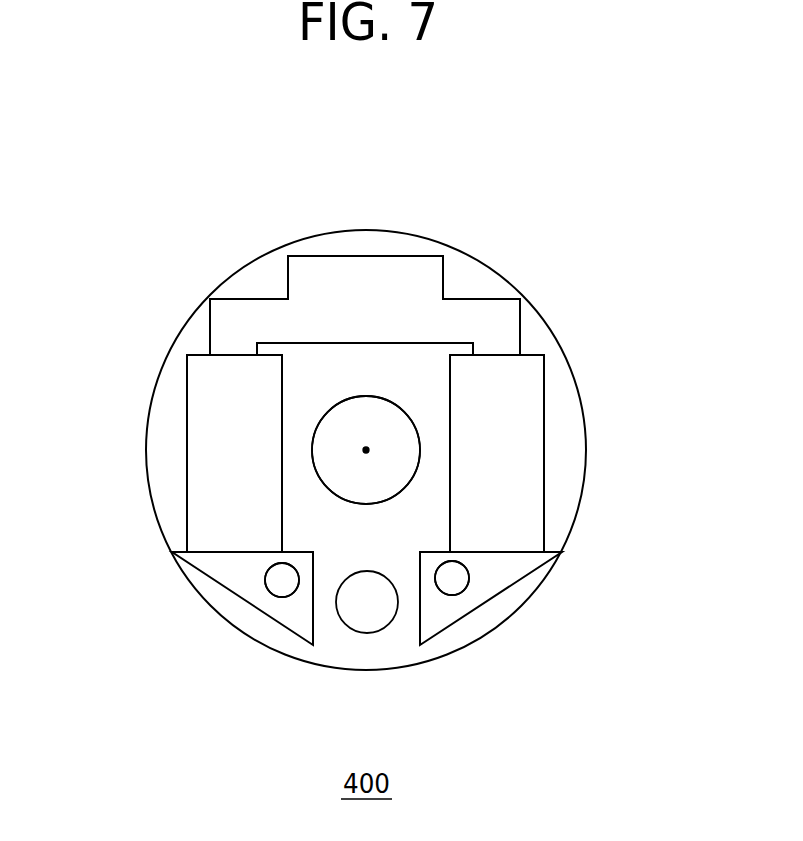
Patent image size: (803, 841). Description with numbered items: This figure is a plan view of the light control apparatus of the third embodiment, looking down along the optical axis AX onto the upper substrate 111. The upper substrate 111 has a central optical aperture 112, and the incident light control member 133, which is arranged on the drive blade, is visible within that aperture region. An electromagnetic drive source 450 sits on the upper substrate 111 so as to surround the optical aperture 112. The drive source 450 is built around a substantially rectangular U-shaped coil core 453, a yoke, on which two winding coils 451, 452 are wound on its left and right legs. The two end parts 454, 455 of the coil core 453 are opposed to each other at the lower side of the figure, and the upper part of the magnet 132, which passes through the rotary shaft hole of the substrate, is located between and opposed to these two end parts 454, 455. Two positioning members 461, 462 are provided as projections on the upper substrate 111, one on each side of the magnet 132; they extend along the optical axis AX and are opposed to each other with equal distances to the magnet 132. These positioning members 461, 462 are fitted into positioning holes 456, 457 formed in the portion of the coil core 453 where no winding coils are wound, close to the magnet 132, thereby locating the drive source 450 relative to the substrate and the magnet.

The upper substrate 111 is at (562, 372).
The optical aperture 112 is at (342, 480).
The magnet 132 is at (367, 617).
The incident light control member 133 is at (345, 437).
The optical axis AX is at (370, 450).
The electromagnetic drive source 450 is at (393, 217).
The winding coil 451 is at (210, 420).
The winding coil 452 is at (522, 418).
The coil core 453 is at (367, 270).
The end part 454 is at (249, 606).
The end part 455 is at (486, 603).
The positioning hole 456 is at (266, 577).
The positioning hole 457 is at (471, 576).
The positioning member 461 is at (277, 587).
The positioning member 462 is at (453, 585).